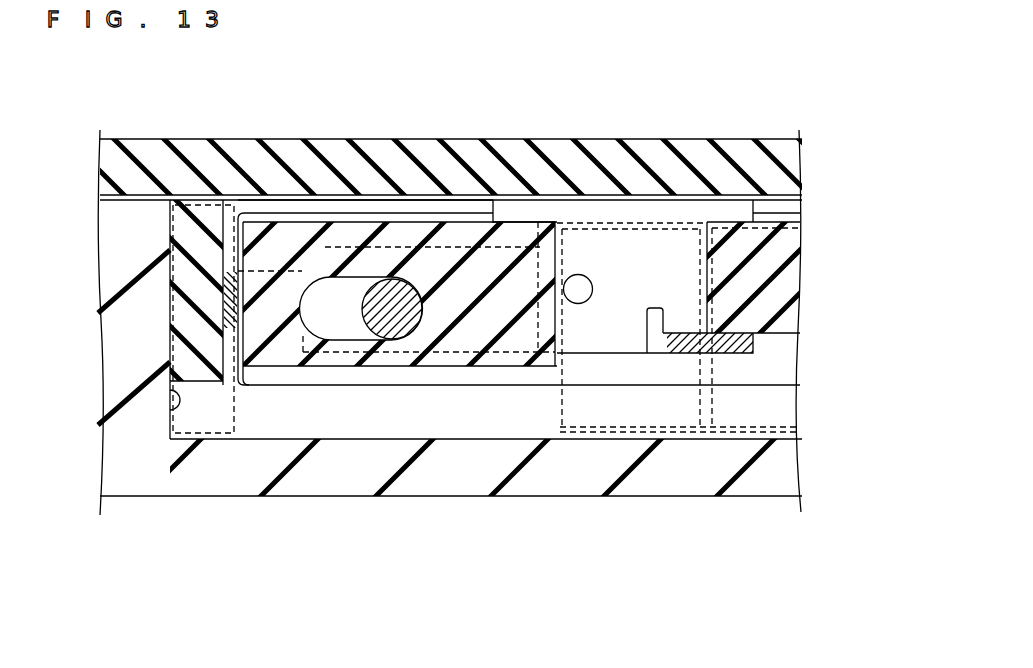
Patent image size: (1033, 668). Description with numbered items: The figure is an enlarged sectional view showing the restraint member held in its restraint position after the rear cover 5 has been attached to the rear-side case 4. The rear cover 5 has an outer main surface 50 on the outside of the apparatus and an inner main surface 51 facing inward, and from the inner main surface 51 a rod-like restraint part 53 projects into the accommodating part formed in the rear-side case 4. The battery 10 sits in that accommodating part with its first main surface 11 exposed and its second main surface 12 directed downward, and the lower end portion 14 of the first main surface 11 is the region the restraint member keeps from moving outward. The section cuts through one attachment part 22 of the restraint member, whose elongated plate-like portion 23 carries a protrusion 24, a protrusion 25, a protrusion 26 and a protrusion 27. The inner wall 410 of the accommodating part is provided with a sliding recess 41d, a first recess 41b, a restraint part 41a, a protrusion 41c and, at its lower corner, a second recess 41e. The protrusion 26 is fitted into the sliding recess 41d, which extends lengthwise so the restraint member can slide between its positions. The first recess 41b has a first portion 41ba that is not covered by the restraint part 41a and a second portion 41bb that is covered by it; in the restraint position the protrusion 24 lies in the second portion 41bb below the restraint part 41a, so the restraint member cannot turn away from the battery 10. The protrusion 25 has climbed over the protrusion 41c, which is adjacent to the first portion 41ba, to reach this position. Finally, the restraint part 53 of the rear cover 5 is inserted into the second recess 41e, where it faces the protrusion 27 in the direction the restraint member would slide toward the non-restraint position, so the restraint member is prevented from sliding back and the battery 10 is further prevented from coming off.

The rear-side case 4 is at (133, 477).
The rear cover 5 is at (468, 160).
The battery 10 is at (303, 373).
The first main surface 11 is at (268, 213).
The second main surface 12 is at (437, 375).
The lower end portion 14 is at (305, 200).
The attachment part 22 is at (627, 323).
The plate-like portion 23 is at (488, 332).
The protrusion 24 is at (714, 340).
The protrusion 25 is at (577, 298).
The protrusion 26 is at (385, 340).
The protrusion 27 is at (235, 315).
The outer main surface 50 is at (511, 139).
The inner main surface 51 is at (417, 200).
The restraint part 53 is at (203, 358).
The inner wall 410 is at (172, 410).
The restraint part 41a is at (772, 240).
The first recess 41b is at (677, 226).
The first portion 41ba is at (617, 226).
The second portion 41bb is at (718, 224).
The protrusion 41c is at (521, 367).
The sliding recess 41d is at (340, 274).
The second recess 41e is at (197, 205).